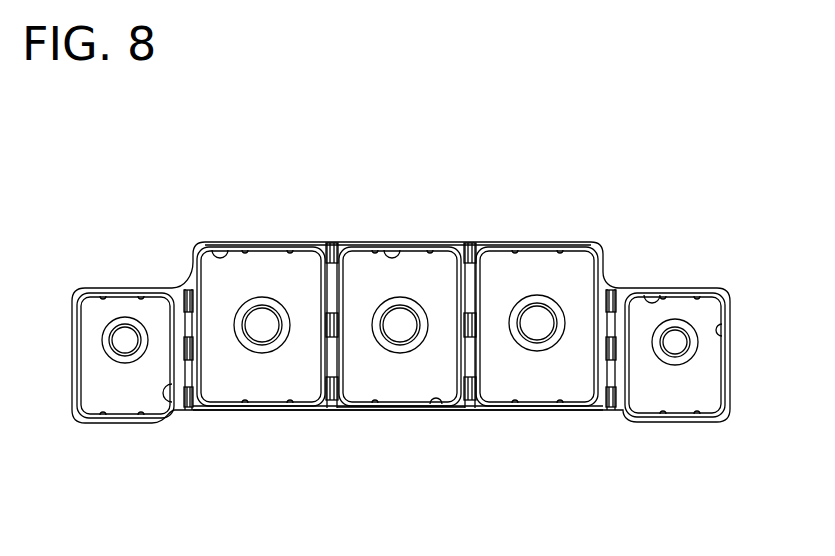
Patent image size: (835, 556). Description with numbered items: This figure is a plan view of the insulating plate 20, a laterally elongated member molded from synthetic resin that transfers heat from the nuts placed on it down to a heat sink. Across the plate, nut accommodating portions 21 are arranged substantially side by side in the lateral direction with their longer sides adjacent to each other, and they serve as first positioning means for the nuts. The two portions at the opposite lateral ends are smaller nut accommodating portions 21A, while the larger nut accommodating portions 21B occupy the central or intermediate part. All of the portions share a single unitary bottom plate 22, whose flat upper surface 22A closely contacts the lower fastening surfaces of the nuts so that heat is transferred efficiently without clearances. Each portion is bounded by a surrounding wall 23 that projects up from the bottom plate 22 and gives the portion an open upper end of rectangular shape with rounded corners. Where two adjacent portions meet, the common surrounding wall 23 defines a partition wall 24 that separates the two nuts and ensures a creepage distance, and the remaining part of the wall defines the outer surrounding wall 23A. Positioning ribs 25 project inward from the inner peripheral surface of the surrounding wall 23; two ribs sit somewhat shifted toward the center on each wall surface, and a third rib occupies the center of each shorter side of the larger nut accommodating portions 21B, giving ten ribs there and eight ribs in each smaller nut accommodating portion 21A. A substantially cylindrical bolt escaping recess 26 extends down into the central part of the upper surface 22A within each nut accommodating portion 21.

The insulating plate 20 is at (647, 232).
The nut accommodating portion 21 is at (245, 412).
The smaller nut accommodating portion 21A is at (717, 413).
The larger nut accommodating portion 21B is at (410, 243).
The bottom plate 22 is at (578, 385).
The upper surface of the bottom plate 22A is at (300, 385).
The surrounding wall 23 is at (398, 325).
The outer surrounding wall 23A is at (405, 407).
The partition wall 24 is at (331, 265).
The positioning rib 25 is at (223, 262).
The bolt escaping recess 26 is at (252, 312).